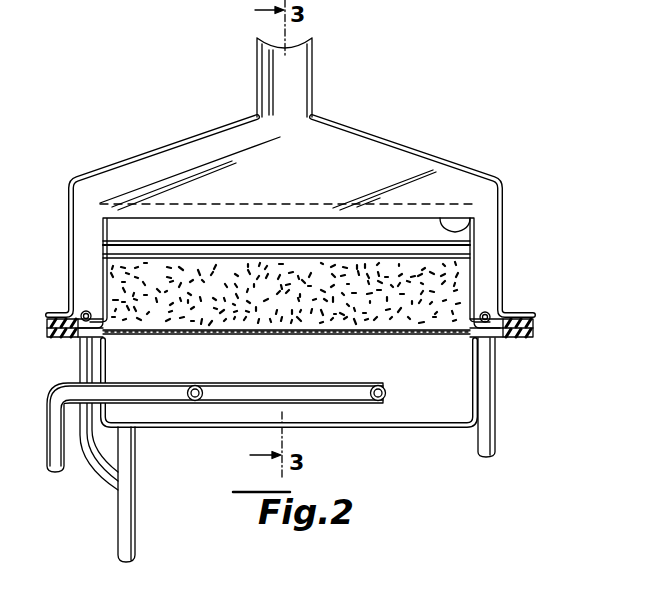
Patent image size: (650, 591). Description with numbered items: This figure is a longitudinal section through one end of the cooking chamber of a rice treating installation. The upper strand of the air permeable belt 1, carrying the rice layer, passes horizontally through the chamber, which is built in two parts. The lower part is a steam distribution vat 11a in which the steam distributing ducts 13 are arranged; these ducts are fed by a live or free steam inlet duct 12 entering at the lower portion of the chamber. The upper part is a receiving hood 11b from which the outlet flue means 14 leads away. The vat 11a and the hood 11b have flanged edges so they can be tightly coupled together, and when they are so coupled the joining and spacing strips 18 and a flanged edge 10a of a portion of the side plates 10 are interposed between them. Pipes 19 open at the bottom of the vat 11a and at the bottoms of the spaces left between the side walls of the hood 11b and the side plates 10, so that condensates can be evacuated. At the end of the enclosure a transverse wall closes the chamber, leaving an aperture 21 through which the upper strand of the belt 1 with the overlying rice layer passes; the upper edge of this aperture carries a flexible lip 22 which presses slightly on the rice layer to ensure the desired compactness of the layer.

The belt 1 is at (405, 337).
The side plates 10 is at (103, 233).
The flanged edge 10a is at (64, 312).
The steam distribution vat 11a is at (405, 427).
The receiving hood 11b is at (370, 135).
The steam inlet duct 12 is at (50, 435).
The distributing ducts 13 is at (196, 388).
The outlet flue means 14 is at (312, 62).
The joining and spacing strips 18 is at (48, 333).
The pipes 19 is at (493, 389).
The aperture 21 is at (470, 222).
The flexible lip 22 is at (460, 238).